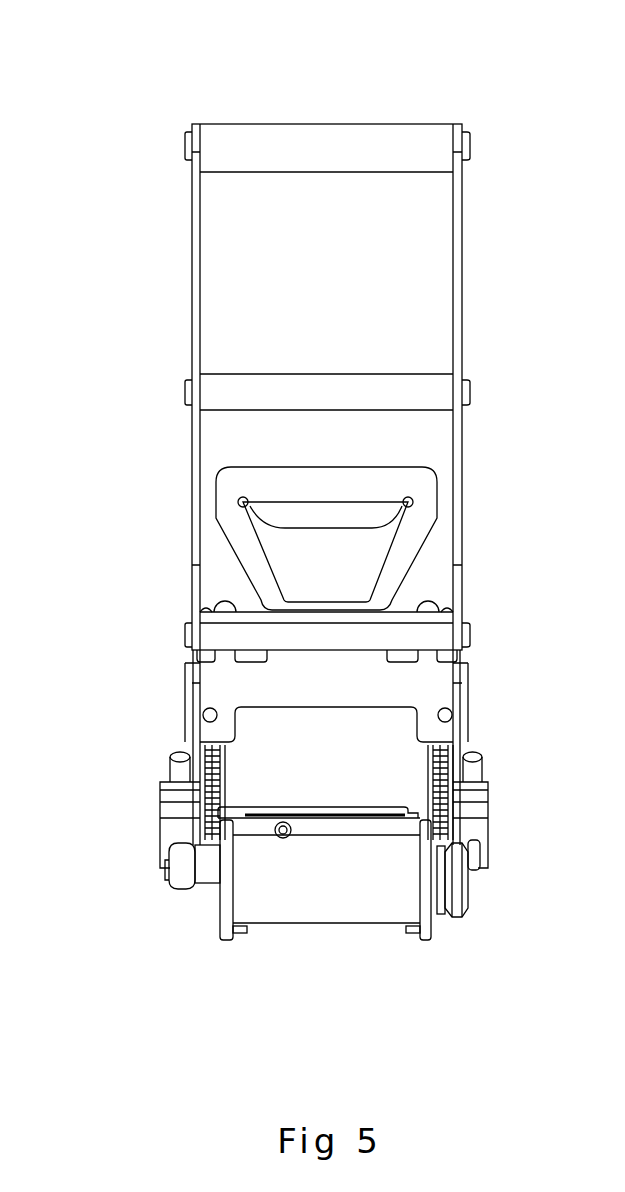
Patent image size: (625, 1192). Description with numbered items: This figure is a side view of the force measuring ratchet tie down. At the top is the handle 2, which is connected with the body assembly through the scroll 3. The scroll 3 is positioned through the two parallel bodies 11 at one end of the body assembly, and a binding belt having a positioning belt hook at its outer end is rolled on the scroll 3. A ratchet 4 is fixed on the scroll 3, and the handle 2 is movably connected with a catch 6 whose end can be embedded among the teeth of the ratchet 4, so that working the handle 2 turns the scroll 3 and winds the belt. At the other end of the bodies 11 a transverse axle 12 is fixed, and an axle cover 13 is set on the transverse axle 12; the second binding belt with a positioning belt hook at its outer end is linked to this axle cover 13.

The handle 2 is at (390, 150).
The catch 6 is at (300, 497).
The ratchet 4 is at (207, 777).
The scroll 3 is at (172, 835).
The body 11 is at (427, 872).
The transverse axle 12 is at (208, 898).
The axle cover 13 is at (340, 900).